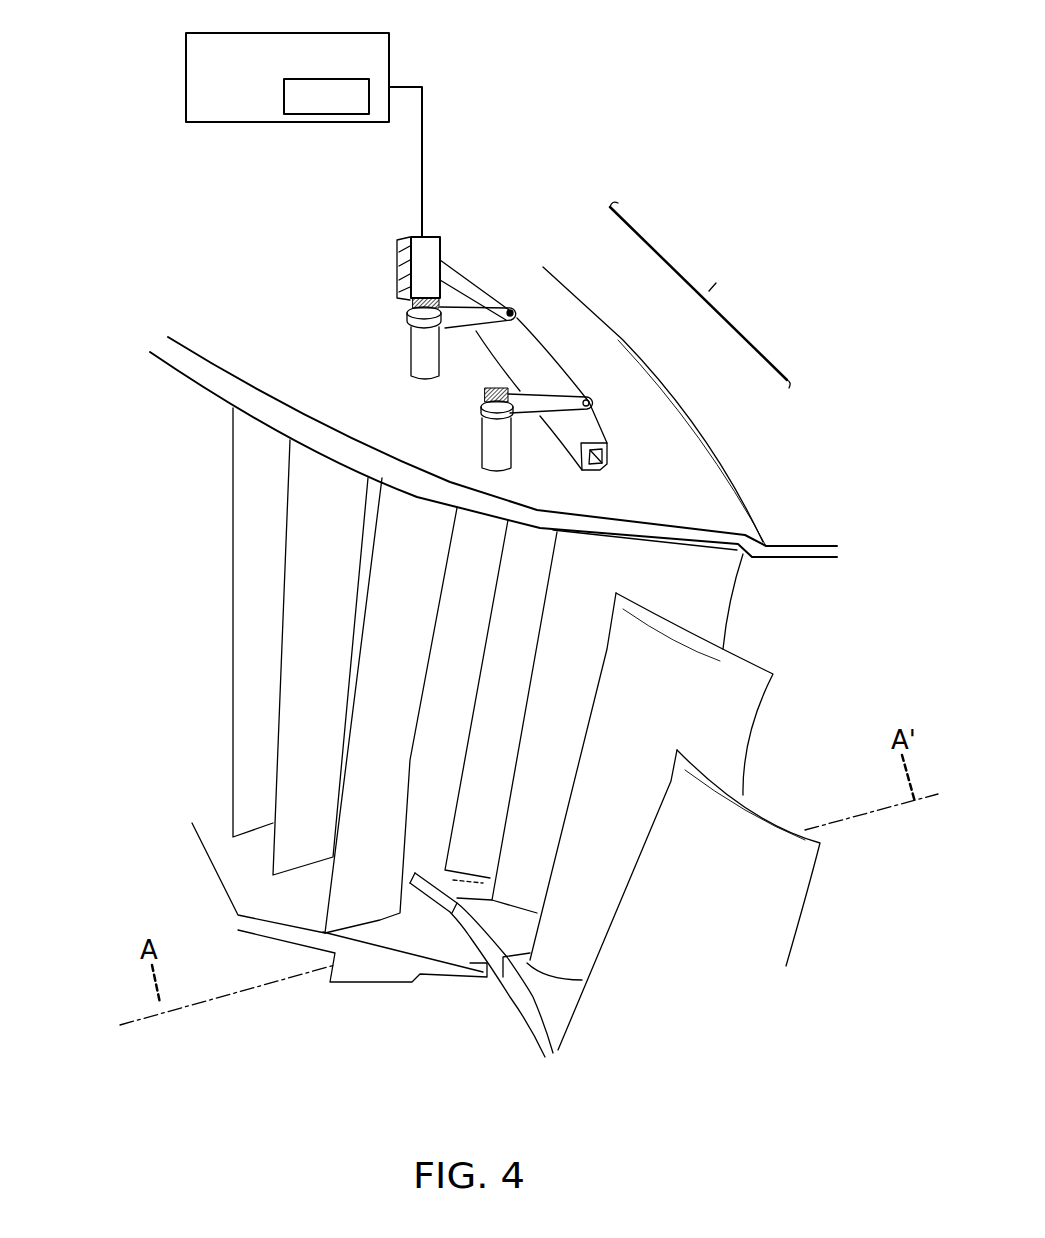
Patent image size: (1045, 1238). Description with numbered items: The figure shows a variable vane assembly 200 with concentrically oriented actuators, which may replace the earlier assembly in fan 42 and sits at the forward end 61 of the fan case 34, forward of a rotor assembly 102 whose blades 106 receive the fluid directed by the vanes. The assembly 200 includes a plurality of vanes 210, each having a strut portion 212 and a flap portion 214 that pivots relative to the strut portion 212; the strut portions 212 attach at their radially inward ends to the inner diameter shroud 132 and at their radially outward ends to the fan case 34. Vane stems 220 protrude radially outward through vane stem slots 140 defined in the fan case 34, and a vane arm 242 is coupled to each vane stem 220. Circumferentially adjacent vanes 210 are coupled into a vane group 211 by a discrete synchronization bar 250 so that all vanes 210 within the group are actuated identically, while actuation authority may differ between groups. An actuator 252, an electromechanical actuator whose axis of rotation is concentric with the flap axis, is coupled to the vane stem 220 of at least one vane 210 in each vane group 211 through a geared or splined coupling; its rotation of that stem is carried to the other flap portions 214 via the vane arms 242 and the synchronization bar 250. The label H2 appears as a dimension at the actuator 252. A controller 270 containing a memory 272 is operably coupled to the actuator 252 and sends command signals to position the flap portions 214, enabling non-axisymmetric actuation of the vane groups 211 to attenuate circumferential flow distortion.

The fan 42 is at (98, 156).
The controller 270 is at (282, 74).
The memory 272 is at (344, 107).
The actuator 252 is at (432, 262).
The actuator height H2 is at (397, 265).
The vane arm 242 is at (463, 313).
The vane group 211 is at (700, 295).
The fan case 34 is at (650, 420).
The forward end 61 is at (176, 356).
The vane stem 220 is at (420, 353).
The vane stem slot 140 is at (400, 358).
The synchronization bar 250 is at (546, 392).
The vane 210 is at (268, 452).
The flap portion 214 is at (383, 500).
The strut portion 212 is at (276, 521).
The variable vane assembly 200 is at (157, 524).
The blade 106 is at (712, 595).
The rotor assembly 102 is at (786, 635).
The inner diameter shroud 132 is at (250, 884).